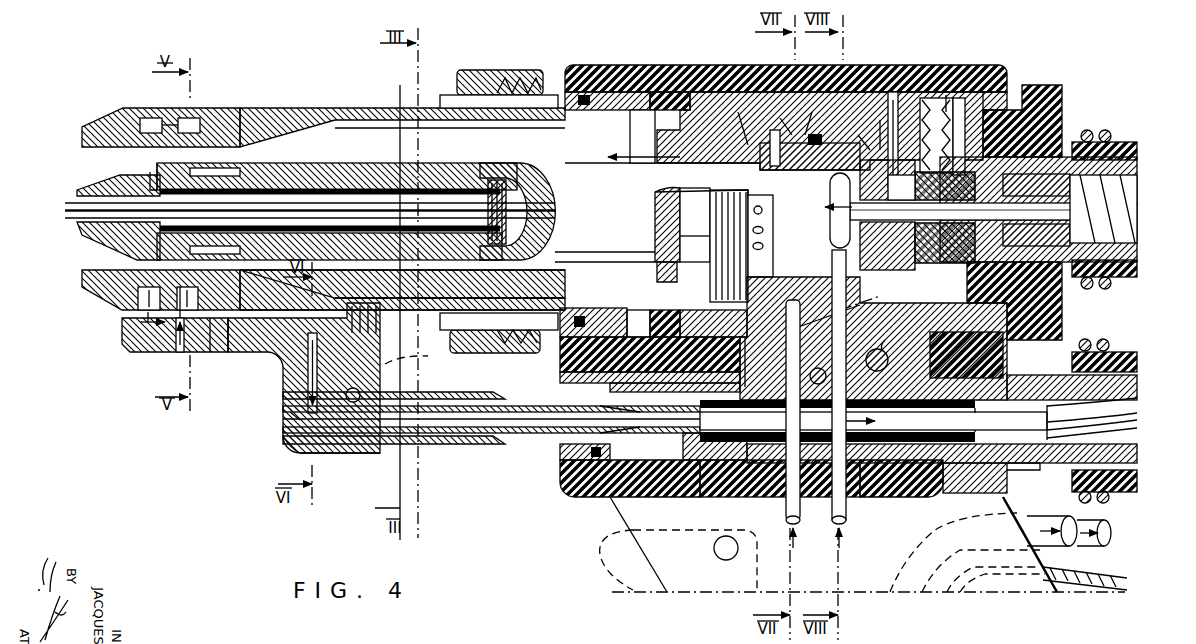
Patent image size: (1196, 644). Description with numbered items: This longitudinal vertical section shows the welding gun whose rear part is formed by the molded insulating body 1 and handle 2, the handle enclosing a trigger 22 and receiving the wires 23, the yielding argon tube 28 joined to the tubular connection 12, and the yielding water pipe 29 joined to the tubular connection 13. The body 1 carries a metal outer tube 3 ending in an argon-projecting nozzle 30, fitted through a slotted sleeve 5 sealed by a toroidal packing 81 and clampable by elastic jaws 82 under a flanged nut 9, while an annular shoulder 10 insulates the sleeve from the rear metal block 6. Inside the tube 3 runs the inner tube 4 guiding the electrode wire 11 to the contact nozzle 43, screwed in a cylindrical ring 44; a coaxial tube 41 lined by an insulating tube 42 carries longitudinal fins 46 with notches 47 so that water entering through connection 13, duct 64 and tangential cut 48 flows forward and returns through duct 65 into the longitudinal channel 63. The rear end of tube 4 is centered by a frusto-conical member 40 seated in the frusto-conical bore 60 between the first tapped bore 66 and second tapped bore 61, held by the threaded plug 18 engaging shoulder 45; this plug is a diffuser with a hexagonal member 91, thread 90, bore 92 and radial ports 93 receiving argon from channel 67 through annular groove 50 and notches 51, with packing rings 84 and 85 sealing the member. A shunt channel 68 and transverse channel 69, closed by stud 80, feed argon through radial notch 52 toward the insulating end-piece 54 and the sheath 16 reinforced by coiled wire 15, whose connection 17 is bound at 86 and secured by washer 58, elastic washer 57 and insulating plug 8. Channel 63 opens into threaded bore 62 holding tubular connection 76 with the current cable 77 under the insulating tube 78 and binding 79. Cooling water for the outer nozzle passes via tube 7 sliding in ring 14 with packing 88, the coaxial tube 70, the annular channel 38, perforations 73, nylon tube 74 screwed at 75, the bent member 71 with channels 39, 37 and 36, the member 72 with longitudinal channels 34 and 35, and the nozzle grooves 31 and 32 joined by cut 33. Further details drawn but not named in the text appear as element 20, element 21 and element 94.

The body 1 is at (645, 65).
The handle 2 is at (1000, 590).
The outer tube 3 is at (375, 108).
The inner tube 4 is at (590, 213).
The sleeve 5 is at (628, 92).
The rear metal block 6 is at (715, 100).
The tube 7 is at (510, 433).
The threaded insulating plug 8 is at (1062, 110).
The flanged nut 9 is at (480, 72).
The annular shoulder 10 is at (680, 92).
The electrode wire 11 is at (72, 205).
The tubular connection 12 is at (800, 520).
The tubular connection 13 is at (846, 518).
The ring 14 is at (563, 463).
The spirally coiled wire 15 is at (1135, 196).
The insulating sheath 16 is at (1137, 155).
The tubular connection 17 is at (1065, 165).
The threaded plug 18 is at (690, 205).
The seal block 20 is at (615, 308).
The drive shaft 21 is at (865, 410).
The trigger 22 is at (625, 568).
The wires 23 is at (1070, 585).
The yielding tube 28 is at (1030, 520).
The yielding water feeding pipe 29 is at (1105, 528).
The nozzle 30 is at (85, 290).
The annular groove 31 is at (180, 330).
The annular groove 32 is at (125, 318).
The cut 33 is at (172, 118).
The longitudinal channel 34 is at (362, 306).
The longitudinal channel 35 is at (155, 335).
The transverse channel 36 is at (417, 356).
The transverse channel 37 is at (292, 386).
The annular channel 38 is at (375, 450).
The channel 39 is at (290, 420).
The frusto-conical member 40 is at (812, 165).
The coaxial tube 41 is at (530, 212).
The insulating tube 42 is at (490, 185).
The nozzle 43 is at (82, 183).
The cylindrical ring 44 is at (138, 178).
The cylindrical shoulder 45 is at (778, 165).
The longitudinal fins 46 is at (318, 168).
The notches 47 is at (208, 170).
The tangential cut 48 is at (834, 200).
The annular groove 50 is at (802, 130).
The notches 51 is at (790, 130).
The radial notch 52 is at (908, 160).
The insulating end-piece 54 is at (975, 263).
The elastic washer 57 is at (950, 98).
The washer 58 is at (958, 98).
The frusto-conical bore 60 is at (865, 140).
The second tapped bore 61 is at (990, 92).
The threaded bore 62 is at (885, 497).
The longitudinal channel 63 is at (745, 497).
The transverse duct 64 is at (870, 352).
The transverse duct 65 is at (818, 368).
The first tapped bore 66 is at (738, 112).
The channel 67 is at (790, 330).
The shunt channel 68 is at (882, 345).
The transverse channel 69 is at (925, 337).
The tube 70 is at (468, 392).
The twice bent hollow member 71 is at (290, 440).
The member 72 is at (212, 345).
The radial perforations 73 is at (637, 420).
The tube 74 is at (955, 465).
The screwed joint 75 is at (683, 497).
The tubular metal connection 76 is at (1016, 470).
The yielding metal cable 77 is at (1130, 440).
The insulating yielding tube 78 is at (1137, 356).
The binding 79 is at (1106, 341).
The stud 80 is at (893, 92).
The toroidal packing 81 is at (584, 95).
The elastic jaws 82 is at (524, 75).
The toroidal packing ring 84 is at (817, 134).
The toroidal packing ring 85 is at (882, 150).
The binding 86 is at (1108, 136).
The tore-shaped packing 88 is at (596, 497).
The thread 90 is at (742, 200).
The six-sided member 91 is at (665, 212).
The bore 92 is at (672, 163).
The radial ports 93 is at (762, 240).
The hole 94 is at (762, 210).